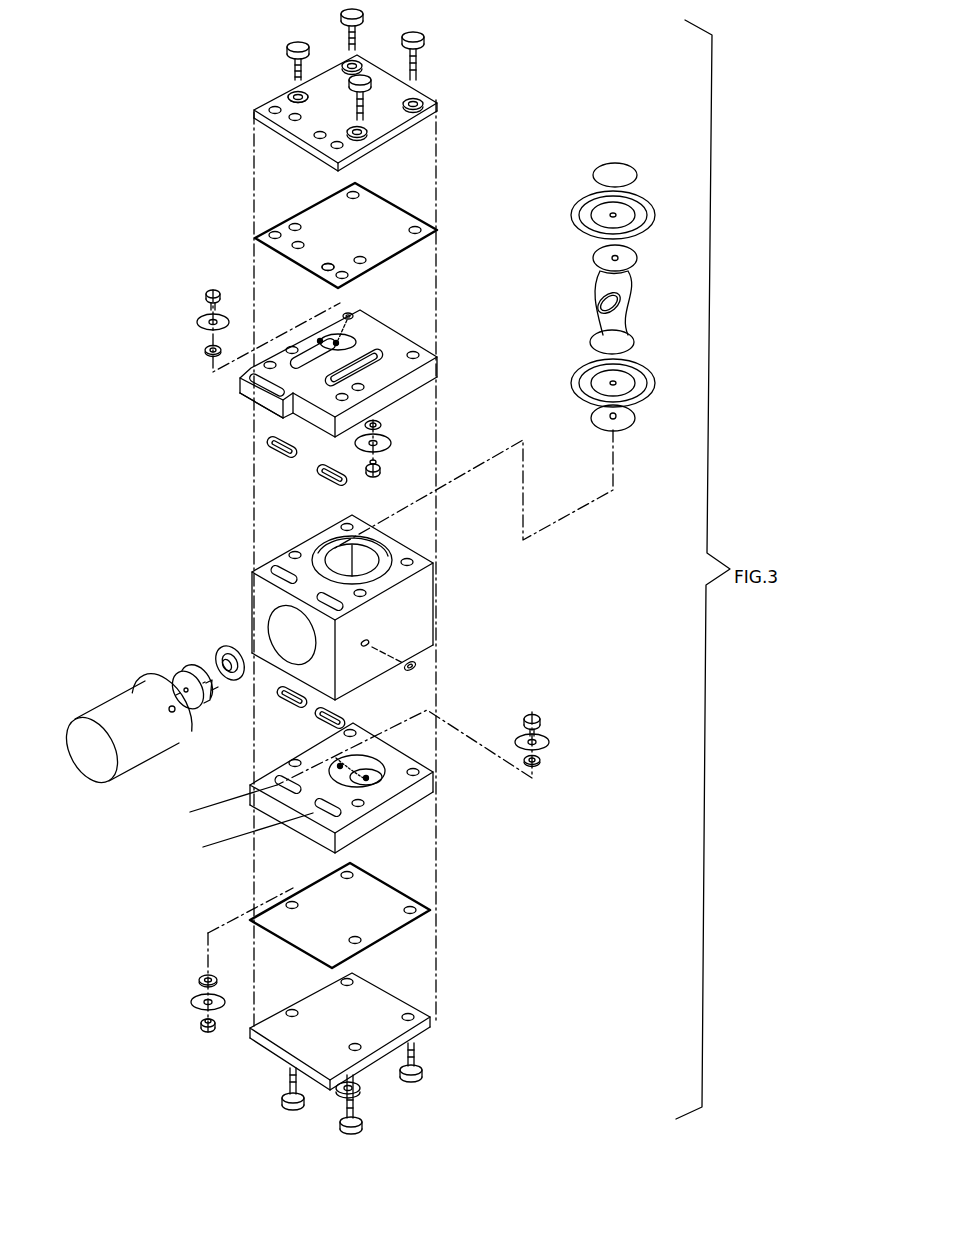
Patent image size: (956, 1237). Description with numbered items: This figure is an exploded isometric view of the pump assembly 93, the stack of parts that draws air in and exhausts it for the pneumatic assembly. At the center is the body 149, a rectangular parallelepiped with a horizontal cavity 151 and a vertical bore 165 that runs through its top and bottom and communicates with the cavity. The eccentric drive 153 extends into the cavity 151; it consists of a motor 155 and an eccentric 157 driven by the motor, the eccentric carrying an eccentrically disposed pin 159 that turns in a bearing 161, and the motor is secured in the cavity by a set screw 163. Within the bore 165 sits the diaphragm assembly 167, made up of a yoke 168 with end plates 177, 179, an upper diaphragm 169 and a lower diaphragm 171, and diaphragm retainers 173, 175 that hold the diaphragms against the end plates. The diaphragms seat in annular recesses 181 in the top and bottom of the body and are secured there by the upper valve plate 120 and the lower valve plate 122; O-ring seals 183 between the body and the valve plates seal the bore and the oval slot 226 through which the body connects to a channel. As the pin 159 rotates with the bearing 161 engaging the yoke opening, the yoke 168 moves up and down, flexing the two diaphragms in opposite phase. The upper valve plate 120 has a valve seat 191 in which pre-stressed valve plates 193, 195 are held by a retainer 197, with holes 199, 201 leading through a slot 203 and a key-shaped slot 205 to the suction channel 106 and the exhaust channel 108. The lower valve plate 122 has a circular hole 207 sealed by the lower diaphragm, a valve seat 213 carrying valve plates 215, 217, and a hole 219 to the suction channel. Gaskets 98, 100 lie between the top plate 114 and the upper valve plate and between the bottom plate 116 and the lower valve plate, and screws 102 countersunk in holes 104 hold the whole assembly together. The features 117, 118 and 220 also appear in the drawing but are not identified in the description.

The pump assembly 93 is at (641, 571).
The gasket 98 is at (356, 184).
The gasket 100 is at (380, 888).
The screws 102 is at (355, 50).
The holes 104 is at (296, 92).
The suction channel 106 is at (329, 266).
The exhaust channel 108 is at (298, 247).
The top plate 114 is at (425, 101).
The bottom plate 116 is at (385, 995).
The slot 117 is at (243, 376).
The ledge 118 is at (258, 398).
The upper valve plate 120 is at (340, 359).
The lower valve plate 122 is at (361, 788).
The body 149 is at (343, 606).
The horizontal cavity 151 is at (280, 622).
The eccentric drive 153 is at (153, 706).
The motor 155 is at (150, 752).
The eccentric 157 is at (180, 702).
The pin 159 is at (214, 686).
The bearing 161 is at (228, 648).
The set screw 163 is at (415, 672).
The vertical bore 165 is at (334, 556).
The diaphragm assembly 167 is at (606, 285).
The yoke 168 is at (606, 316).
The upper diaphragm 169 is at (640, 204).
The lower diaphragm 171 is at (578, 380).
The diaphragm retainer 173 is at (620, 170).
The diaphragm retainer 175 is at (630, 410).
The end plate 177 is at (598, 260).
The end plate 179 is at (596, 349).
The annular recesses 181 is at (387, 550).
The O-ring seals 183 is at (320, 470).
The valve seat 191 is at (325, 337).
The valve plate 193 is at (386, 441).
The valve plate 195 is at (198, 322).
The retainer 197 is at (206, 295).
The hole 199 is at (205, 350).
The hole 201 is at (350, 313).
The slot 203 is at (377, 338).
The key-shaped slot 205 is at (321, 340).
The circular hole 207 is at (355, 749).
The valve seat 213 is at (368, 777).
The valve plate 215 is at (545, 740).
The valve plate 217 is at (196, 999).
The hole 219 is at (380, 770).
The line 220 is at (232, 834).
The oval slot 226 is at (212, 803).